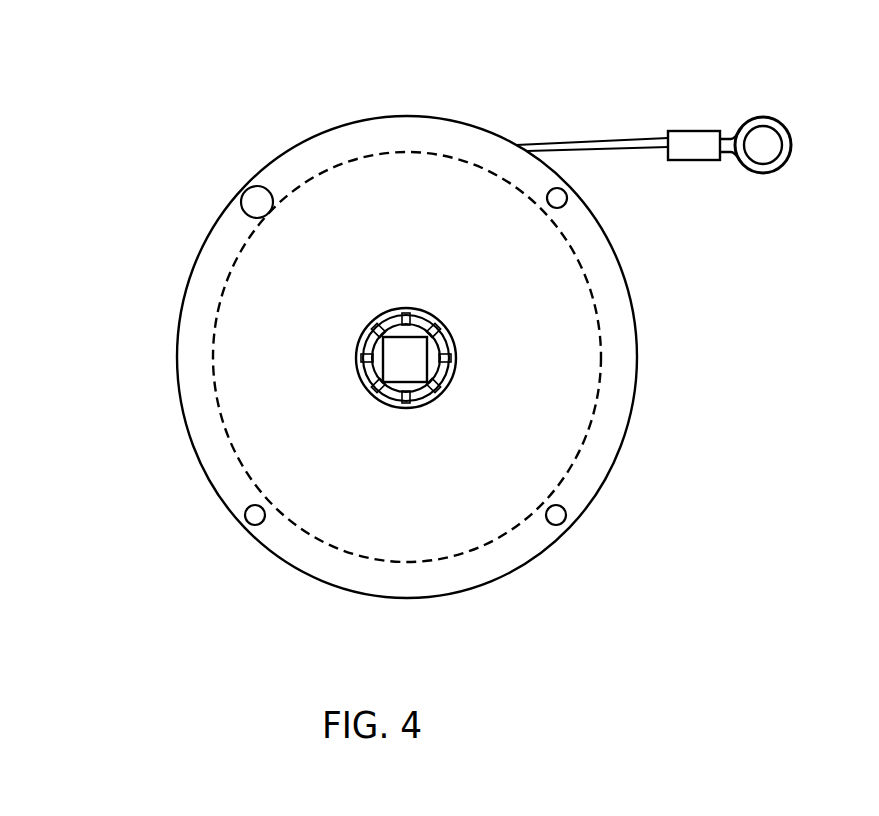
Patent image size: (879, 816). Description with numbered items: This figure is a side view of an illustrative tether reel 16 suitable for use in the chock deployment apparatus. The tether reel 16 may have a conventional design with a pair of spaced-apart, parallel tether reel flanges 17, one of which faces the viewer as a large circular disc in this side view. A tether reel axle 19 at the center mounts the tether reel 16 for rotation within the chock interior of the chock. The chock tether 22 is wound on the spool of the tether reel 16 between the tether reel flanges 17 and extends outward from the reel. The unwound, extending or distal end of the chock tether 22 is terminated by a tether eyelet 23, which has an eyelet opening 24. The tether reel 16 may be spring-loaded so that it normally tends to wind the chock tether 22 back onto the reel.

The tether reel 16 is at (351, 123).
The tether reel flanges 17 is at (610, 308).
The tether reel axle 19 is at (408, 360).
The chock tether 22 is at (572, 142).
The tether eyelet 23 is at (770, 120).
The eyelet opening 24 is at (758, 168).